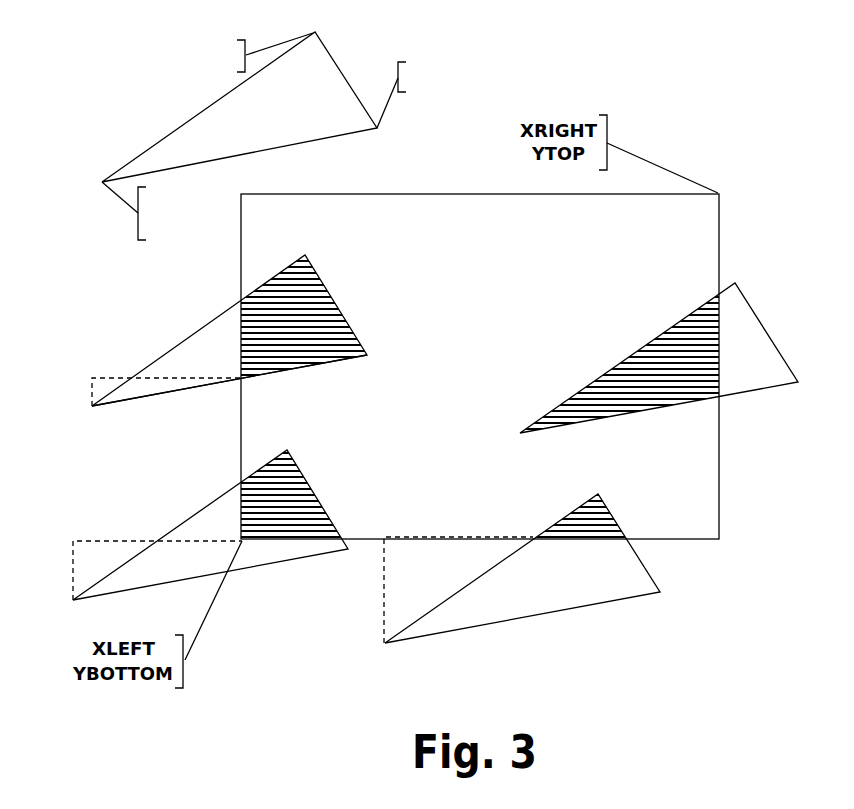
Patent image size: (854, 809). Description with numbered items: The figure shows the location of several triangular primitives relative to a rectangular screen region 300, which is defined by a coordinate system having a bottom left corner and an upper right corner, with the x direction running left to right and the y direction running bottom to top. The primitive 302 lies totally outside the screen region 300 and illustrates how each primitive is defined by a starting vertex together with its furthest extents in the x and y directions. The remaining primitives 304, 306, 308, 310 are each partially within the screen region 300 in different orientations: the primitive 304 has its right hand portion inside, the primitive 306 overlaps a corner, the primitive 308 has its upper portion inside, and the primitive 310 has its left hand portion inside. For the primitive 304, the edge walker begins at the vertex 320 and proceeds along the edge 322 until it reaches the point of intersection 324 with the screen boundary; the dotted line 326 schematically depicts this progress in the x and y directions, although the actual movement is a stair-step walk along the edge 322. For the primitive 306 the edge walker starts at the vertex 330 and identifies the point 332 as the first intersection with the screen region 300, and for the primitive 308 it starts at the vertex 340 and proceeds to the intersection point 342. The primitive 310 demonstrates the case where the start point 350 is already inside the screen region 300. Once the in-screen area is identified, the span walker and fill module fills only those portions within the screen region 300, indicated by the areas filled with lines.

The screen region 300 is at (480, 366).
The primitive 302 is at (167, 132).
The primitive 304 is at (213, 320).
The primitive 306 is at (198, 512).
The primitive 308 is at (587, 606).
The primitive 310 is at (735, 396).
The vertex 320 is at (92, 407).
The edge 322 is at (177, 392).
The point of intersection 324 is at (239, 380).
The dotted line 326 is at (98, 378).
The vertex 330 is at (73, 600).
The point 332 is at (242, 541).
The vertex 340 is at (383, 643).
The intersection point 342 is at (533, 540).
The start point 350 is at (520, 433).